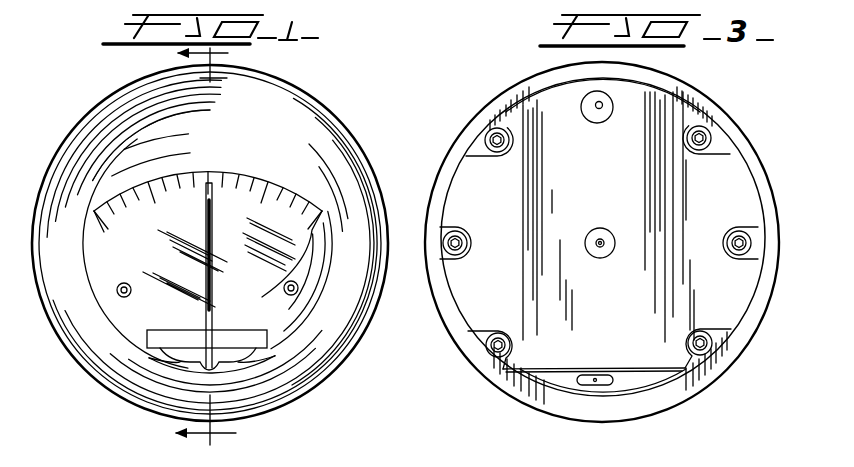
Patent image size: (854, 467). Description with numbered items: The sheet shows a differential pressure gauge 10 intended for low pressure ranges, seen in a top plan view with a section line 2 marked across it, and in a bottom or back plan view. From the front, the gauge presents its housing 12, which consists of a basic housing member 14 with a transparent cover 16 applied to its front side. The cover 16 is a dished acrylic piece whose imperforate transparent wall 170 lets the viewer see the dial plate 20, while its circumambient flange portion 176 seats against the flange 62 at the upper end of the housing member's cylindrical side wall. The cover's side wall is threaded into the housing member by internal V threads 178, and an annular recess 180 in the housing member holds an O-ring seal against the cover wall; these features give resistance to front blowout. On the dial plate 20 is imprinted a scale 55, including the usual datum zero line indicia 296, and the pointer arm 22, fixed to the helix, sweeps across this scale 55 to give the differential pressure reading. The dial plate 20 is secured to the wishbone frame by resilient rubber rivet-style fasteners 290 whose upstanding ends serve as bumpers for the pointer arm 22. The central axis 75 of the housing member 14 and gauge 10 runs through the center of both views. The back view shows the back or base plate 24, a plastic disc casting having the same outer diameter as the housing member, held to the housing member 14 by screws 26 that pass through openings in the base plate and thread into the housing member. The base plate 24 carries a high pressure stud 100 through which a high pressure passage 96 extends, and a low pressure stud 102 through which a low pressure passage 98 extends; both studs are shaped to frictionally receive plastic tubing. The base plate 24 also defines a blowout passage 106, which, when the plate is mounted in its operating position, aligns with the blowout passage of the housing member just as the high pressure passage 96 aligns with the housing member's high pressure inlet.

In FIG. 1, the section line 2- 2 is at (214, 250).
In FIG. 1, the differential pressure gauge 10 is at (113, 425).
In FIG. 3, the differential pressure gauge 10 is at (470, 387).
In FIG. 1, the housing 12 is at (366, 124).
In FIG. 3, the housing 12 is at (440, 336).
In FIG. 3, the basic housing member 14 is at (470, 113).
In FIG. 1, the transparent cover 16 is at (294, 381).
In FIG. 1, the dial plate 20 is at (258, 140).
In FIG. 1, the pointer arm 22 is at (218, 274).
In FIG. 3, the back or base plate 24 is at (706, 362).
In FIG. 3, the screws 26 is at (497, 127).
In FIG. 1, the scale 55 is at (281, 175).
In FIG. 1, the flange 62 is at (199, 398).
In FIG. 3, the flange 62 is at (752, 313).
In FIG. 1, the central axis 75 is at (213, 247).
In FIG. 3, the central axis 75 is at (593, 239).
In FIG. 3, the high pressure passage 96 is at (596, 123).
In FIG. 3, the low pressure passage 98 is at (601, 251).
In FIG. 3, the high pressure stud 100 is at (603, 111).
In FIG. 3, the low pressure stud 102 is at (611, 245).
In FIG. 3, the blowout passage 106 is at (596, 378).
In FIG. 1, the imperforate transparent wall 170 is at (306, 183).
In FIG. 1, the circumambient flange portion 176 is at (352, 213).
In FIG. 1, the internal V threads 178 is at (178, 412).
In FIG. 1, the annular recess 180 is at (245, 411).
In FIG. 1, the fasteners 290 is at (116, 306).
In FIG. 1, the datum zero line indicia 296 is at (111, 242).